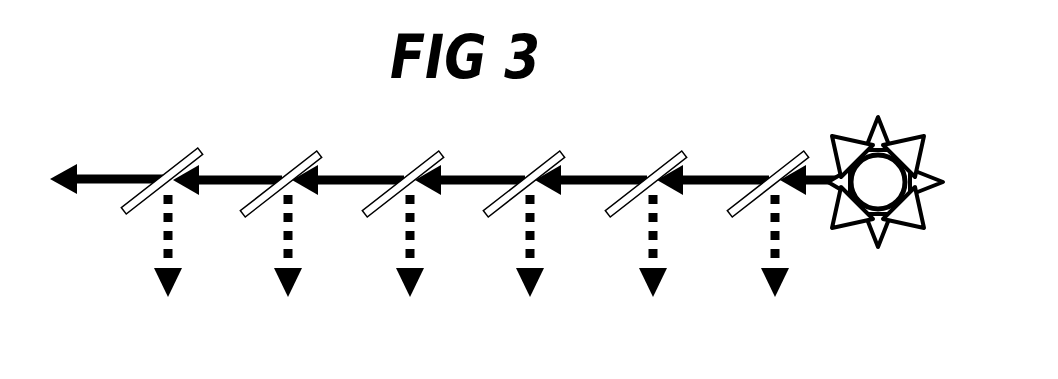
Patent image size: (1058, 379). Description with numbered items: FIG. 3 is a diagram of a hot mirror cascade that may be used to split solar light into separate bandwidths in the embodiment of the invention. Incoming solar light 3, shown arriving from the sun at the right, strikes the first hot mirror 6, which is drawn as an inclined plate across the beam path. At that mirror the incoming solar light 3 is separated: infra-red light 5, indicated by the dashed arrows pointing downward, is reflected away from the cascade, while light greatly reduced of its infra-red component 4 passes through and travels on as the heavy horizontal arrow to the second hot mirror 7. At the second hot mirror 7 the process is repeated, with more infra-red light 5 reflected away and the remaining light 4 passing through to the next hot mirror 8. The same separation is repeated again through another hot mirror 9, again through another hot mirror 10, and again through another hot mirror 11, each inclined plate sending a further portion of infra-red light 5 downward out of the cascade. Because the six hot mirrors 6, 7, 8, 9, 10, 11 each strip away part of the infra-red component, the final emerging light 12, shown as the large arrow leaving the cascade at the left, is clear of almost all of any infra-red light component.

The incoming solar light 3 is at (806, 180).
The light greatly reduced of its infra-red component 4 is at (713, 177).
The infra-red light 5 is at (778, 232).
The beam splitter 6 is at (797, 155).
The second hot mirror 7 is at (665, 160).
The hot mirror 8 is at (545, 160).
The hot mirror 9 is at (427, 158).
The hot mirror 10 is at (310, 158).
The hot mirror 11 is at (188, 150).
The final emerging light 12 is at (103, 170).